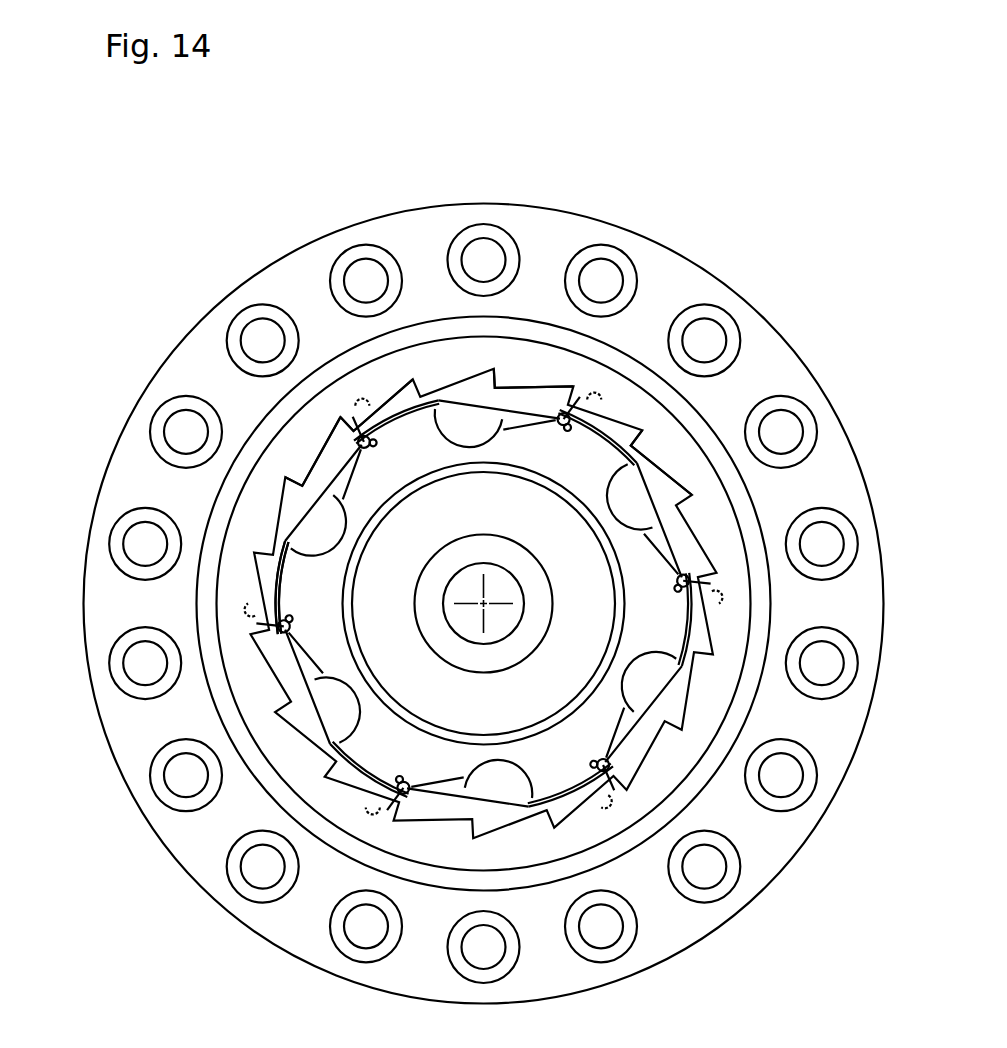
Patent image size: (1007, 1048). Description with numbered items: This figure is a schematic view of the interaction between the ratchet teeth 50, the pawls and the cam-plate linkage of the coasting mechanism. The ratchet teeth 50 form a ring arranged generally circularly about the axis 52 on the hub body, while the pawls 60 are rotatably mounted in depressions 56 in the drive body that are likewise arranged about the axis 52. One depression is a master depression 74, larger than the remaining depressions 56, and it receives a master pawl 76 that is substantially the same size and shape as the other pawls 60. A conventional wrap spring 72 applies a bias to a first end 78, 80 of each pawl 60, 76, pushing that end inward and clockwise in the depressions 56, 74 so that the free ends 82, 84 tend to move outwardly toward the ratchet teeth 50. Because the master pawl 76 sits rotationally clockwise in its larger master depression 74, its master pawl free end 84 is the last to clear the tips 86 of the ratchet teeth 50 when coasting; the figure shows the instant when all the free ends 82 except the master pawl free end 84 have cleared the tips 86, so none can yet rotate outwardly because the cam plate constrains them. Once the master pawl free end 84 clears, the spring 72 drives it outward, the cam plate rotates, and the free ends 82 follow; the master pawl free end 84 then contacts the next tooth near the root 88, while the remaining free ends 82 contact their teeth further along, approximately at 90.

The ratchet teeth 50 is at (425, 387).
The axis 52 is at (484, 604).
The depressions 56 is at (362, 440).
The pawls 60 is at (311, 497).
The wrap spring 72 is at (273, 593).
The master depression 74 is at (642, 430).
The master pawl 76 is at (562, 408).
The first end 78 is at (287, 531).
The first end 80 is at (473, 400).
The free ends 82 is at (339, 417).
The master pawl free end 84 is at (572, 420).
The tips 86 is at (442, 392).
The root 88 is at (495, 370).
The contact location 90 is at (327, 438).